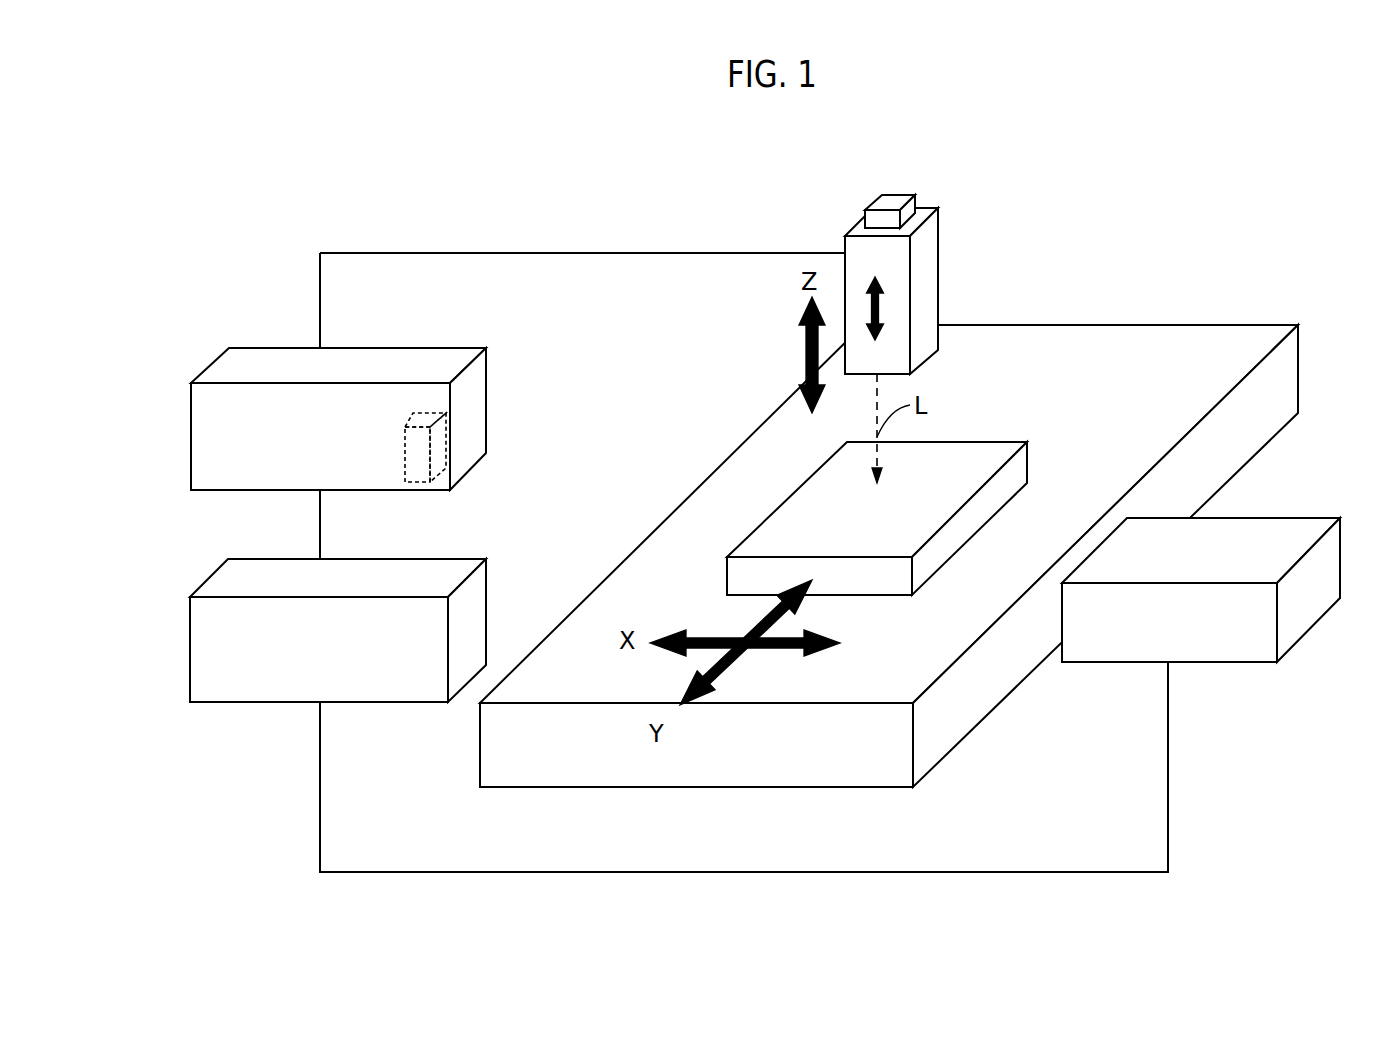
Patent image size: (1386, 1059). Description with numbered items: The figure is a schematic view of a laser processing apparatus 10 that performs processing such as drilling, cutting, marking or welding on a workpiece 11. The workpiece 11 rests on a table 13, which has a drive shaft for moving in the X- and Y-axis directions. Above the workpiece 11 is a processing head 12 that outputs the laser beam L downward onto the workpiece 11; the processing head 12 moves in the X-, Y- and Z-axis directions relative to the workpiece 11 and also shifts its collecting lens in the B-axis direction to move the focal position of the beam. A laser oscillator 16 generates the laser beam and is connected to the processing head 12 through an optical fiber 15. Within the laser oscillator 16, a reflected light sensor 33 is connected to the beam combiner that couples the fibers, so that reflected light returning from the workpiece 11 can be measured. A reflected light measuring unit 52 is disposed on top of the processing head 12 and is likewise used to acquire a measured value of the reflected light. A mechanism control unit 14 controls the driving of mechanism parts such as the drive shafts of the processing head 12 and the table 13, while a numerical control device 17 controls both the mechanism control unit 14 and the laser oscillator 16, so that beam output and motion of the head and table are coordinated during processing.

The laser processing apparatus 10 is at (1076, 166).
The workpiece 11 is at (991, 459).
The processing head 12 is at (926, 253).
The table 13 is at (1214, 334).
The mechanism control unit 14 is at (1265, 530).
The optical fiber 15 is at (578, 254).
The laser oscillator 16 is at (366, 405).
The numerical control device 17 is at (442, 573).
The reflected light sensor 33 is at (437, 446).
The reflected light measuring unit 52 is at (897, 201).